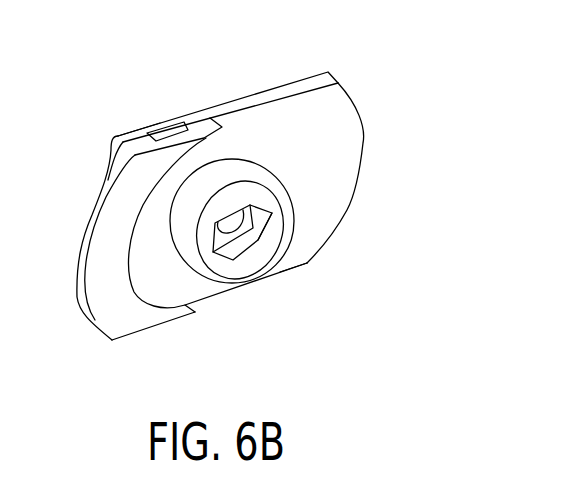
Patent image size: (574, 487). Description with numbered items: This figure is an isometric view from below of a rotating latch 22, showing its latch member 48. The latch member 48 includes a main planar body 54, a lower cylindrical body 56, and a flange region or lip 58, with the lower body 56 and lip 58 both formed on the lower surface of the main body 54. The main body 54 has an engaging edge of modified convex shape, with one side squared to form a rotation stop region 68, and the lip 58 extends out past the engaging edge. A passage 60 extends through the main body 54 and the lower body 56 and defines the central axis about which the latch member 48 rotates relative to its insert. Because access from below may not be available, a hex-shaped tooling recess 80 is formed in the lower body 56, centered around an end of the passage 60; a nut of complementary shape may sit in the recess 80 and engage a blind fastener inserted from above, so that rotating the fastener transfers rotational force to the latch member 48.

The rotating latch 22 is at (95, 113).
The latch member 48 is at (314, 271).
The main planar body 54 is at (355, 143).
The lower cylindrical body 56 is at (233, 268).
The flange region or lip 58 is at (103, 315).
The passage 60 is at (242, 208).
The rotation stop region 68 is at (150, 138).
The hex-shaped tooling recess 80 is at (272, 213).